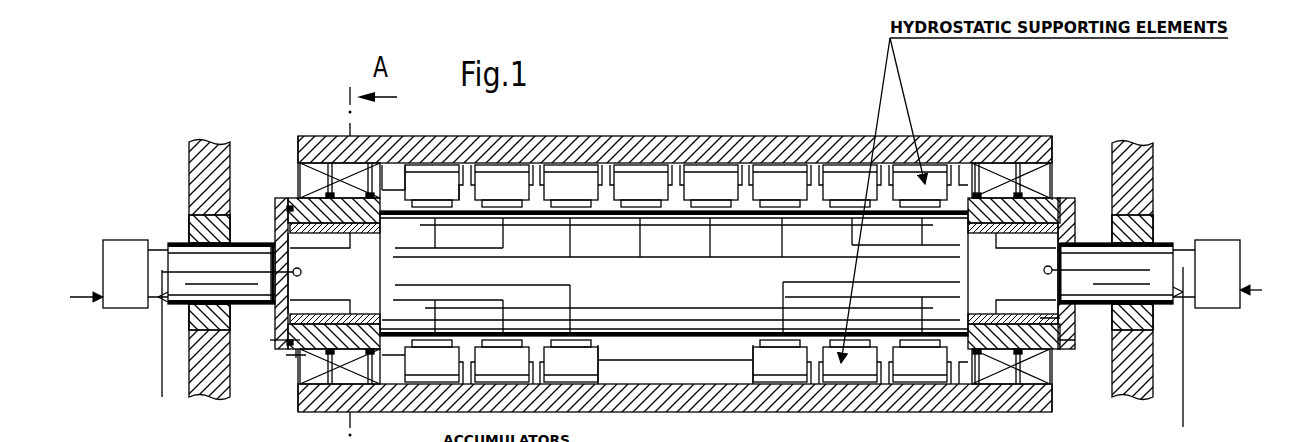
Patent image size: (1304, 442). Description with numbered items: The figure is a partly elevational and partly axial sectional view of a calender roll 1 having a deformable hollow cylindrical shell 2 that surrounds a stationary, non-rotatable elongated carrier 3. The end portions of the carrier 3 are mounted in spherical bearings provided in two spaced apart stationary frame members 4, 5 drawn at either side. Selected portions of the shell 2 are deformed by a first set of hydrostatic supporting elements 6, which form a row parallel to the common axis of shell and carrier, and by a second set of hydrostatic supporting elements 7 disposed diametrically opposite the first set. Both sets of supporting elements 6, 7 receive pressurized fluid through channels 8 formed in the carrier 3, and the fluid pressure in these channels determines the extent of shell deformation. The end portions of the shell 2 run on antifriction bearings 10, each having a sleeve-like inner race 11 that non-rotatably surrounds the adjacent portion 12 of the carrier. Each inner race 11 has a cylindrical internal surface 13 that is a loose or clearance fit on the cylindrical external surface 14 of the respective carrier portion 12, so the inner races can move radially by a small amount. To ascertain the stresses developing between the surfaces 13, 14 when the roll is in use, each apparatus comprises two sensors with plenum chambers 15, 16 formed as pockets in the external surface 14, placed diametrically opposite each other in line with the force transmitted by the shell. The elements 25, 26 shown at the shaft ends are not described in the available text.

The roll 1 is at (675, 249).
The deformable hollow cylindrical shell 2 is at (848, 143).
The stationary non-rotatable elongated carrier 3 is at (652, 338).
The stationary frame member 4 is at (209, 143).
The stationary frame member 5 is at (1133, 157).
The first set of hydrostatic supporting elements 6 is at (775, 182).
The second set of hydrostatic supporting elements 7 is at (780, 358).
The channels 8 is at (745, 257).
The antifriction bearings 10 is at (347, 177).
The sleeve-like inner race 11 is at (316, 200).
The carrier portion 12 is at (298, 206).
The cylindrical internal surface 13 is at (1036, 325).
The cylindrical external surface 14 is at (1058, 340).
The plenum chamber 15 is at (392, 163).
The plenum chamber 16 is at (295, 355).
The hydraulic pressure supply 25 is at (103, 252).
The hydraulic return line 26 is at (82, 297).